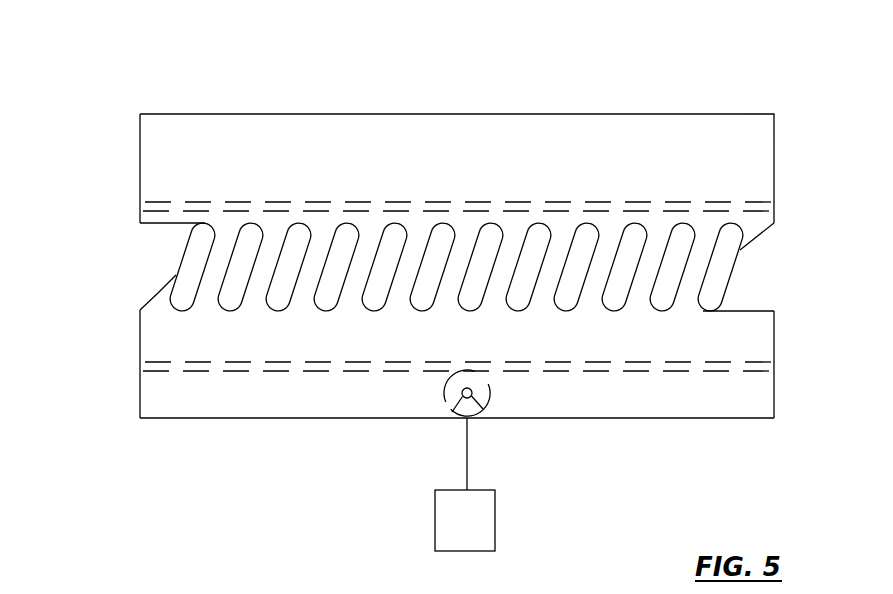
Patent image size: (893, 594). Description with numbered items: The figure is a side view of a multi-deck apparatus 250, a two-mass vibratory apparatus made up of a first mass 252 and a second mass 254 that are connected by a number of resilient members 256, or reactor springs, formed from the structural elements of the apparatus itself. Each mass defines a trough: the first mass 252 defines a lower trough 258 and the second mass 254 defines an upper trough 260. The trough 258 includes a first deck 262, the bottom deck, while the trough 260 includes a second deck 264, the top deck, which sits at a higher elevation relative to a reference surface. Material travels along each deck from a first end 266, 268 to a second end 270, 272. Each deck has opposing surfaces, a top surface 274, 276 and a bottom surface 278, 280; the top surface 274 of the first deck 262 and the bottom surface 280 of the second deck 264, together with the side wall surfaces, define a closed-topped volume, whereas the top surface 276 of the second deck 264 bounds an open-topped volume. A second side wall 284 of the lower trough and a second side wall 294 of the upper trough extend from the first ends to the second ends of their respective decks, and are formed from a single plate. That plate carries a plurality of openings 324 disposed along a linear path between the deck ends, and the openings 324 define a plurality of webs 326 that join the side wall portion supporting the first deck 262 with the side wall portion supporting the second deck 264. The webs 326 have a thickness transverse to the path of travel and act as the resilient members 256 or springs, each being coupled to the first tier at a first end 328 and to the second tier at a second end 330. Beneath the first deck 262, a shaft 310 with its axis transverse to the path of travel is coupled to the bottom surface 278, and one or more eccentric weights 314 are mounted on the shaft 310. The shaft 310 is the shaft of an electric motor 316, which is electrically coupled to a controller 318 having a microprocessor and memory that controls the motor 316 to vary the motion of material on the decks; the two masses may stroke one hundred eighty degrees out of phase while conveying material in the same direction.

The multi-deck apparatus 250 is at (459, 284).
The first mass 252 is at (459, 372).
The second mass 254 is at (459, 176).
The resilient members 256 is at (441, 288).
The trough 258 is at (766, 305).
The trough 260 is at (772, 112).
The first deck 262 is at (610, 361).
The second deck 264 is at (650, 201).
The first end 266 is at (793, 313).
The first end 268 is at (793, 162).
The second end 270 is at (129, 328).
The second end 272 is at (129, 165).
The first surface 274 is at (757, 361).
The first surface 276 is at (766, 200).
The second surface 278 is at (777, 386).
The second surface 280 is at (774, 220).
The second side wall 284 is at (581, 413).
The second side wall 294 is at (550, 130).
The shaft 310 is at (444, 417).
The eccentric weights 314 is at (456, 411).
The electric motor 316 is at (441, 405).
The controller 318 is at (488, 520).
The openings 324 is at (202, 287).
The webs 326 is at (176, 277).
The first end 328 is at (140, 304).
The second end 330 is at (210, 232).